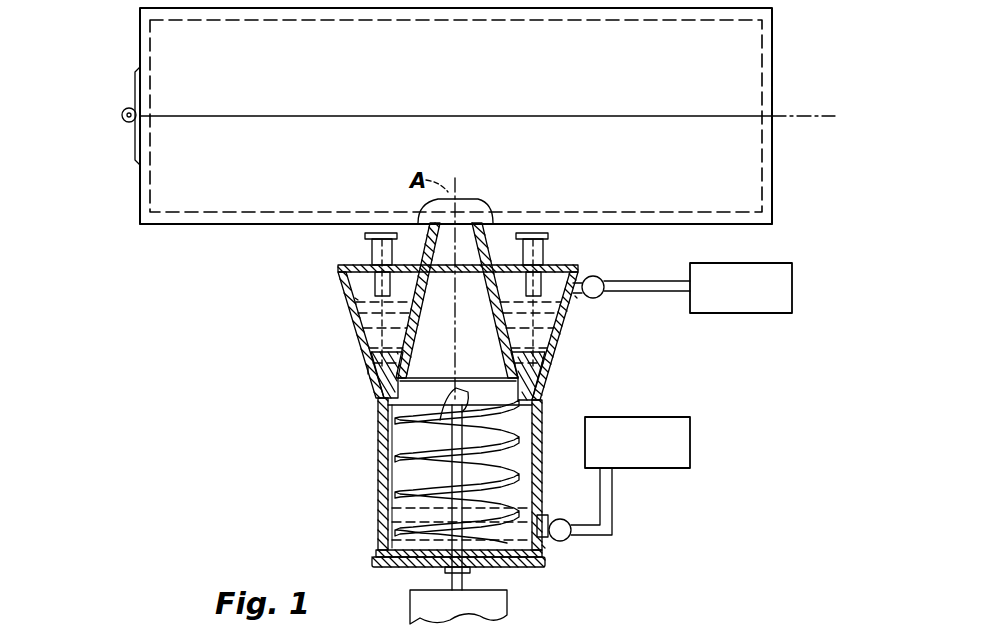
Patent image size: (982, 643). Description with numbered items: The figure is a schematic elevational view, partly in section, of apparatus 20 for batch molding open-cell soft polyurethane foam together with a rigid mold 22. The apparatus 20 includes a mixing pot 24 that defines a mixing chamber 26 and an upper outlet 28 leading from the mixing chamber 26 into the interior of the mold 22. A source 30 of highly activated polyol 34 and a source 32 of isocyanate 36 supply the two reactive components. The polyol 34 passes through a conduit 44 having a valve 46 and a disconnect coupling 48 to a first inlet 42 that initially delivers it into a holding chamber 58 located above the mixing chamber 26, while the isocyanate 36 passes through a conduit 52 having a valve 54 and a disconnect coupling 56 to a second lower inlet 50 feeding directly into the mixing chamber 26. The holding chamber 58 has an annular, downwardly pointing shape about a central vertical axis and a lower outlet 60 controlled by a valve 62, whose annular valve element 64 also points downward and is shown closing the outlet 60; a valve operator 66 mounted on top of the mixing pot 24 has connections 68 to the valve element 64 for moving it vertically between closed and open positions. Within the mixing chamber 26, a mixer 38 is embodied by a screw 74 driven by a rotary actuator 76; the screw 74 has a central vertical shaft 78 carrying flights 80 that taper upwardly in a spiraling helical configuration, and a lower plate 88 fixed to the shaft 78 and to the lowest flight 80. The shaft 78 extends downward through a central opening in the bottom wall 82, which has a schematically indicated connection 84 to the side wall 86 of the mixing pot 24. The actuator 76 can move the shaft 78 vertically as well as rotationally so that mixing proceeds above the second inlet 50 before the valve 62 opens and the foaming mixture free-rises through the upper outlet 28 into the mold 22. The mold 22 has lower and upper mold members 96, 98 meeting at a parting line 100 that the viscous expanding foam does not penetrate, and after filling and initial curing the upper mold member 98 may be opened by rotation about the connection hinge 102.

The apparatus 20 is at (345, 395).
The mold 22 is at (222, 232).
The mixing pot 24 is at (560, 404).
The mixing chamber 26 is at (400, 442).
The upper outlet 28 is at (470, 226).
The source of highly activated polyol 30 is at (783, 290).
The source of isocyanate 32 is at (683, 436).
The highly activated polyol 34 is at (353, 330).
The isocyanate 36 is at (388, 509).
The mixer 38 is at (392, 434).
The first inlet 42 is at (578, 282).
The conduit 44 is at (668, 294).
The valve 46 is at (598, 277).
The disconnect coupling 48 is at (575, 296).
The second lower inlet 50 is at (545, 548).
The conduit 52 is at (614, 498).
The valve 54 is at (556, 541).
The disconnect coupling 56 is at (543, 516).
The holding chamber 58 is at (358, 300).
The lower outlet 60 is at (528, 350).
The valve 62 is at (360, 370).
The annular valve element 64 is at (373, 362).
The valve operator 66 is at (372, 254).
The connections 68 is at (528, 282).
The screw 74 is at (513, 452).
The rotary actuator 76 is at (412, 608).
The central vertical shaft 78 is at (472, 497).
The flights 80 is at (390, 482).
The bottom wall 82 is at (505, 567).
The connection 84 is at (378, 553).
The side wall 86 is at (405, 437).
The lower plate 88 is at (388, 545).
The lower mold member 96 is at (752, 226).
The upper mold member 98 is at (772, 45).
The parting line 100 is at (818, 122).
The connection hinge 102 is at (122, 119).